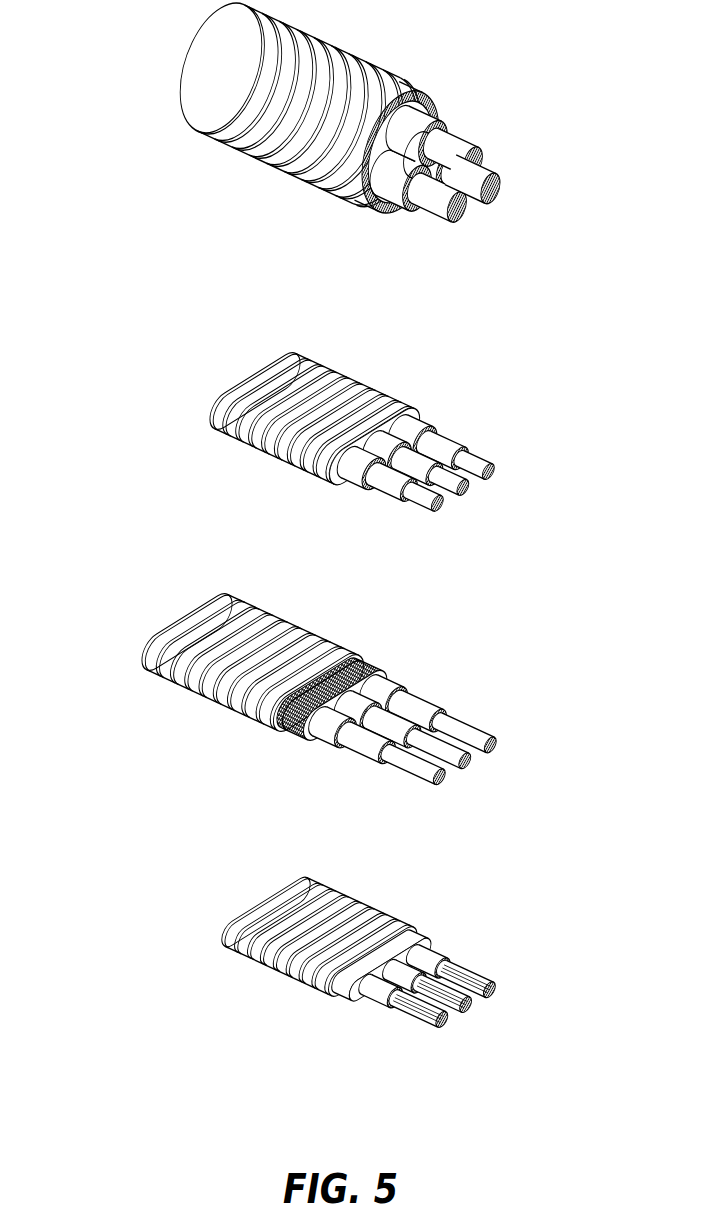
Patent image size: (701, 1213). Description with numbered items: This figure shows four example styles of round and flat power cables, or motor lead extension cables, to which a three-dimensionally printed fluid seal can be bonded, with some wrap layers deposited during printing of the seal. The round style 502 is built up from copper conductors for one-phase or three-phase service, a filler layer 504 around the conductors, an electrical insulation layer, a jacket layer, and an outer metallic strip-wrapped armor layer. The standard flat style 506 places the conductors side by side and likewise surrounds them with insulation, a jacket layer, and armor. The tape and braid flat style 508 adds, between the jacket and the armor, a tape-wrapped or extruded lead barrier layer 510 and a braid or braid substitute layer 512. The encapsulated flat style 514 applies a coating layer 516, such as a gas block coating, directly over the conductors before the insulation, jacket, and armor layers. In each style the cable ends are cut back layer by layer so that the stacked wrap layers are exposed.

The round style 502 is at (273, 159).
The filler layer 504 is at (412, 176).
The standard flat style 506 is at (287, 418).
The tape and braid flat style 508 is at (276, 668).
The braid or braid substitute layer 512 is at (280, 727).
The barrier layer 510 is at (317, 733).
The encapsulated flat style 514 is at (286, 941).
The coating layer 516 is at (400, 1013).